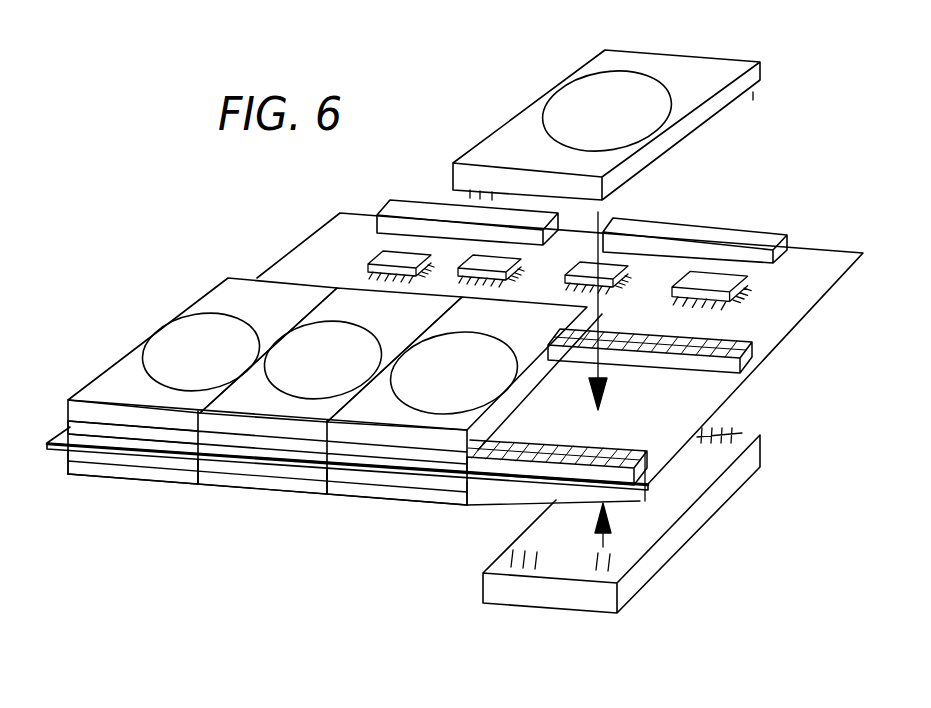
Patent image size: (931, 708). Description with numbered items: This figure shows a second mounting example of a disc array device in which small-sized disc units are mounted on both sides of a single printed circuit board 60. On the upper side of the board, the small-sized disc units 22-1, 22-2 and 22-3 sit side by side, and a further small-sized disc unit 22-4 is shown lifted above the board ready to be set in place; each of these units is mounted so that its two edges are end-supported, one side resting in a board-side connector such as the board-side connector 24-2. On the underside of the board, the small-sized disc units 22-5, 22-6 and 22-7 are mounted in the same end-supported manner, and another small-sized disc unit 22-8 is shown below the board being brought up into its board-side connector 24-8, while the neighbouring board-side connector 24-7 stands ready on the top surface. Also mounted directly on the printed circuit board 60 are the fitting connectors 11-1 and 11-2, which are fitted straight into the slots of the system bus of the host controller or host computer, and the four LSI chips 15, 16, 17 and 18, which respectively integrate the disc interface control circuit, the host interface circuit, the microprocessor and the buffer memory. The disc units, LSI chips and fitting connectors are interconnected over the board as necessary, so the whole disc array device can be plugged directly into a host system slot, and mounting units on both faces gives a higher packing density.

The printed circuit board 60 is at (803, 317).
The small-sized disc unit 22-1 is at (150, 393).
The small-sized disc unit 22-2 is at (252, 400).
The small-sized disc unit 22-3 is at (380, 413).
The small-sized disc unit 22-4 is at (657, 63).
The small-sized disc unit 22-5 is at (174, 472).
The small-sized disc unit 22-6 is at (290, 478).
The small-sized disc unit 22-7 is at (427, 493).
The small-sized disc unit 22-8 is at (552, 600).
The board-side connector 24-2 is at (93, 437).
The board-side connector 24-7 is at (760, 360).
The board-side connector 24-8 is at (627, 445).
The fitting connector 11-1 is at (407, 212).
The fitting connector 11-2 is at (727, 233).
The LSI chip 15 is at (382, 253).
The LSI chip 16 is at (477, 263).
The LSI chip 17 is at (577, 272).
The LSI chip 18 is at (697, 280).